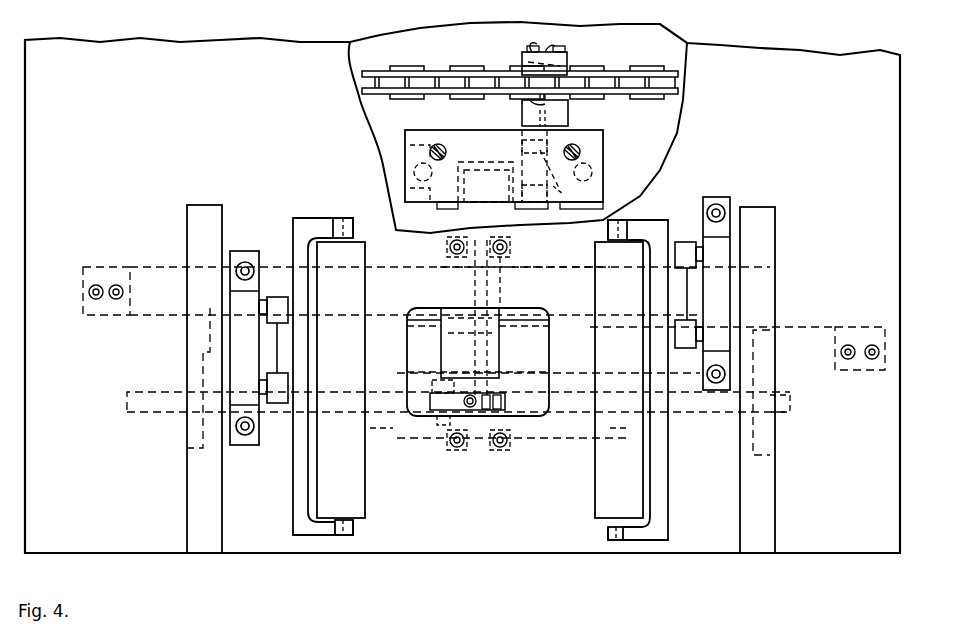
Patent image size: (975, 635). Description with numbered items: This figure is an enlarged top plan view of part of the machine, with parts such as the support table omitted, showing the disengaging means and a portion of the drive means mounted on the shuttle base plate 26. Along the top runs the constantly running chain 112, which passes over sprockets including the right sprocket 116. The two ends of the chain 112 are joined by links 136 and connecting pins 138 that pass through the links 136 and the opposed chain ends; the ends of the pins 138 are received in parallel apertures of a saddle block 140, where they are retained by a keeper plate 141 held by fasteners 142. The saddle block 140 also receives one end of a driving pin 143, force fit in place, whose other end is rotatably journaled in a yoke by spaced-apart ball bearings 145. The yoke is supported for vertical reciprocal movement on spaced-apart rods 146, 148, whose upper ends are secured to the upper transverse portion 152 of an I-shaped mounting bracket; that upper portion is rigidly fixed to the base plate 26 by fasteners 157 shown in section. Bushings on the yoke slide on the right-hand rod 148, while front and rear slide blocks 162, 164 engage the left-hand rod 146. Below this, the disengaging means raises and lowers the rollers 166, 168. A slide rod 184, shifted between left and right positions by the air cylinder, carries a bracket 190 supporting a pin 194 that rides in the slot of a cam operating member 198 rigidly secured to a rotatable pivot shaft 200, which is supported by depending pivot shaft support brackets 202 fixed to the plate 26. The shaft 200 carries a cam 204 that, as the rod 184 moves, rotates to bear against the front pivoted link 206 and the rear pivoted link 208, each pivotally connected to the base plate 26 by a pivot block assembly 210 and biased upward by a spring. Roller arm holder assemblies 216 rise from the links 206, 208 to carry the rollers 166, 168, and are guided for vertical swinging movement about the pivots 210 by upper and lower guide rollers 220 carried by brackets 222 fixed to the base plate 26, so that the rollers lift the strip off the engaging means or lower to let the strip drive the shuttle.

The shuttle base plate 26 is at (118, 111).
The chain 112 is at (396, 62).
The right sprocket 116 is at (530, 445).
The links 136 is at (522, 103).
The connecting pins 138 is at (572, 62).
The saddle block 140 is at (568, 112).
The keeper plate 141 is at (528, 68).
The fasteners 142 is at (552, 55).
The driving pin 143 is at (520, 165).
The ball bearings 145 is at (576, 192).
The left-hand rod 146 is at (410, 162).
The right-hand rod 148 is at (593, 167).
The upper transverse portion 152 is at (410, 198).
The fasteners 157 is at (440, 144).
The front slide block 162 is at (406, 190).
The rear slide block 164 is at (408, 146).
The roller 166 is at (366, 488).
The roller 168 is at (606, 487).
The slide rod 184 is at (147, 411).
The bracket 190 is at (470, 317).
The pin 194 is at (430, 384).
The cam operating member 198 is at (425, 403).
The pivot shaft 200 is at (500, 332).
The pivot shaft support brackets 202 is at (518, 246).
The cam 204 is at (440, 335).
The front pivoted link 206 is at (420, 324).
The rear pivoted link 208 is at (428, 308).
The pivot block assembly 210 is at (102, 252).
The roller arm holder assembly 216 is at (262, 340).
The guide rollers 220 is at (278, 297).
The brackets 222 is at (243, 251).